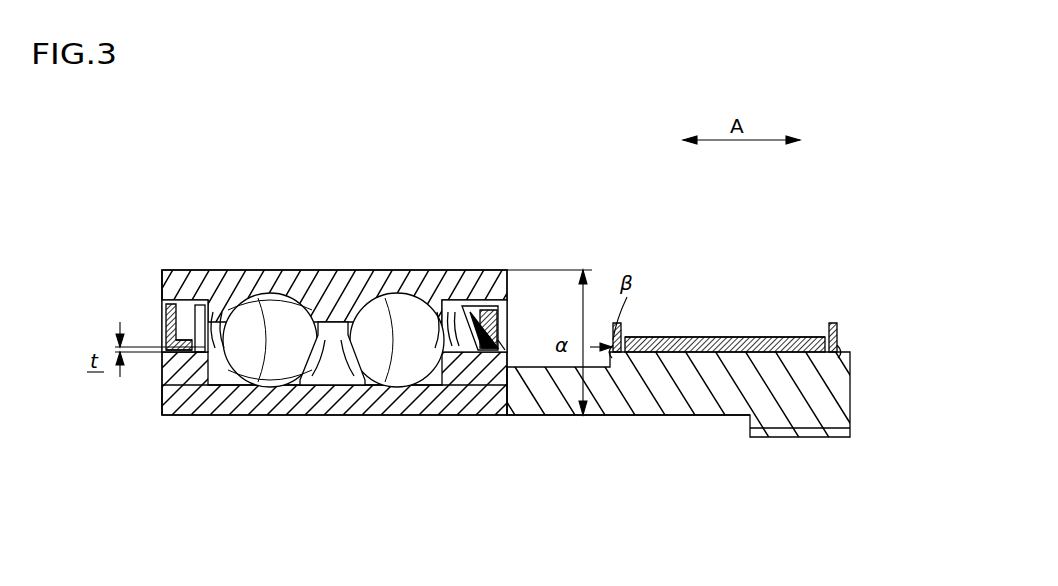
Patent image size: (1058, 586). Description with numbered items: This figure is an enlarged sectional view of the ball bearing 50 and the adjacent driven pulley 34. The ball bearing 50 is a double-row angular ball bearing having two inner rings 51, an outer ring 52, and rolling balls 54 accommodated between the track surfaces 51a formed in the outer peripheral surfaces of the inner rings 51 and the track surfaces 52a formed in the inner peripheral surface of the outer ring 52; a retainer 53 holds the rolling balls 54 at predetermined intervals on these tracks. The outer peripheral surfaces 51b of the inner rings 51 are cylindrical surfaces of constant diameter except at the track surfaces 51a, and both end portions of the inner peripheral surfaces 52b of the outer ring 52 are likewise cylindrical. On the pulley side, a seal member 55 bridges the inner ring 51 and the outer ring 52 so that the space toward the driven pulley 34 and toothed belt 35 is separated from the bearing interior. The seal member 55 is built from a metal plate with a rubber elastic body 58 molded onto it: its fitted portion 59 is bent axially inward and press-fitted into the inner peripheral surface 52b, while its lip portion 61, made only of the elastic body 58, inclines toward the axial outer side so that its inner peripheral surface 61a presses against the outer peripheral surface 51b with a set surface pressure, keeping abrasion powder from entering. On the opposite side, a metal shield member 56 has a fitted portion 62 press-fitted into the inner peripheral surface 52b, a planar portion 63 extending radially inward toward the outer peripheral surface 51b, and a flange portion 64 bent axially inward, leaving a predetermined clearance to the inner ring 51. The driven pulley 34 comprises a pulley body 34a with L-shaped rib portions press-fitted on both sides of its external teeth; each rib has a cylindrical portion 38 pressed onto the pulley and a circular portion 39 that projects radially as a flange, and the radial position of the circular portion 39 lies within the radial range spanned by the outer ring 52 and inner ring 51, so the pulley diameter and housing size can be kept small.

The ball bearing 50 is at (200, 248).
The inner ring 51 is at (215, 418).
The track surface 51a is at (260, 270).
The outer peripheral surface 51b is at (165, 268).
The outer ring 52 is at (287, 270).
The track surface 52a is at (305, 270).
The inner peripheral surface 52b is at (223, 270).
The retainer 53 is at (288, 414).
The rolling ball 54 is at (262, 355).
The seal member 55 is at (505, 305).
The shield member 56 is at (165, 302).
The elastic body 58 is at (495, 335).
The fitted portion 59 is at (465, 302).
The lip portion 61 is at (505, 345).
The inner peripheral surface 61a is at (503, 352).
The fitted portion 62 is at (165, 268).
The planar portion 63 is at (162, 343).
The flange portion 64 is at (186, 352).
The driven pulley 34 is at (790, 440).
The pulley body 34a is at (690, 418).
The toothed belt 35 is at (780, 340).
The cylindrical portion 38 is at (617, 416).
The circular portion 39 is at (620, 322).